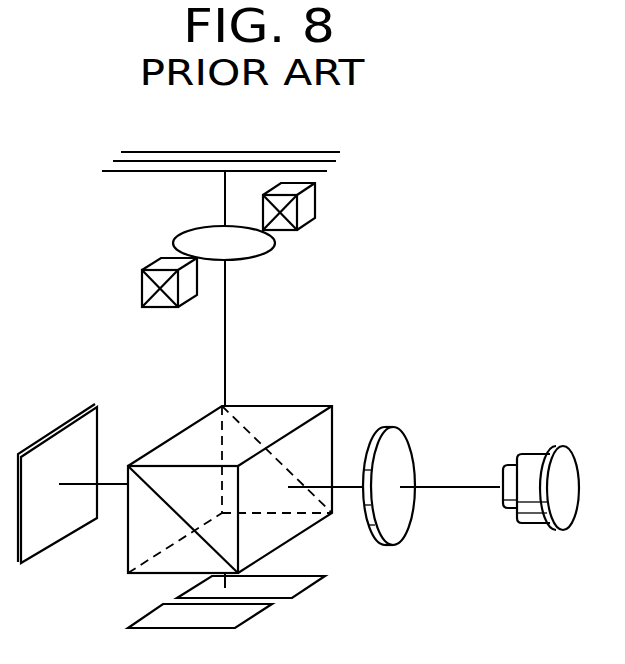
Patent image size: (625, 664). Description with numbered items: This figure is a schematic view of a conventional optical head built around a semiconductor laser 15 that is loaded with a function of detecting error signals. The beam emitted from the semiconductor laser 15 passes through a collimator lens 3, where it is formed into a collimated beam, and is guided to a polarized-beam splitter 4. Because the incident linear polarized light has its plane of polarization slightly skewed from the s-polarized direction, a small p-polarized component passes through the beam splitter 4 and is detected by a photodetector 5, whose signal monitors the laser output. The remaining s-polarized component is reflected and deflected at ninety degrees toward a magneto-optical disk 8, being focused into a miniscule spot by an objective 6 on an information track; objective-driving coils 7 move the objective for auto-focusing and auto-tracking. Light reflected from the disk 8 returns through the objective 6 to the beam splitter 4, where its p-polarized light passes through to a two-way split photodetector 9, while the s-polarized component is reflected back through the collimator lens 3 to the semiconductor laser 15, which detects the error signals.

The collimator lens 3 is at (396, 427).
The polarized-beam splitter 4 is at (303, 405).
The photodetector 5 is at (67, 428).
The objective 6 is at (272, 253).
The objective-driving coils 7 is at (315, 207).
The magneto-optical disk 8 is at (303, 151).
The two-way split photodetector 9 is at (258, 609).
The semiconductor laser 15 is at (558, 447).